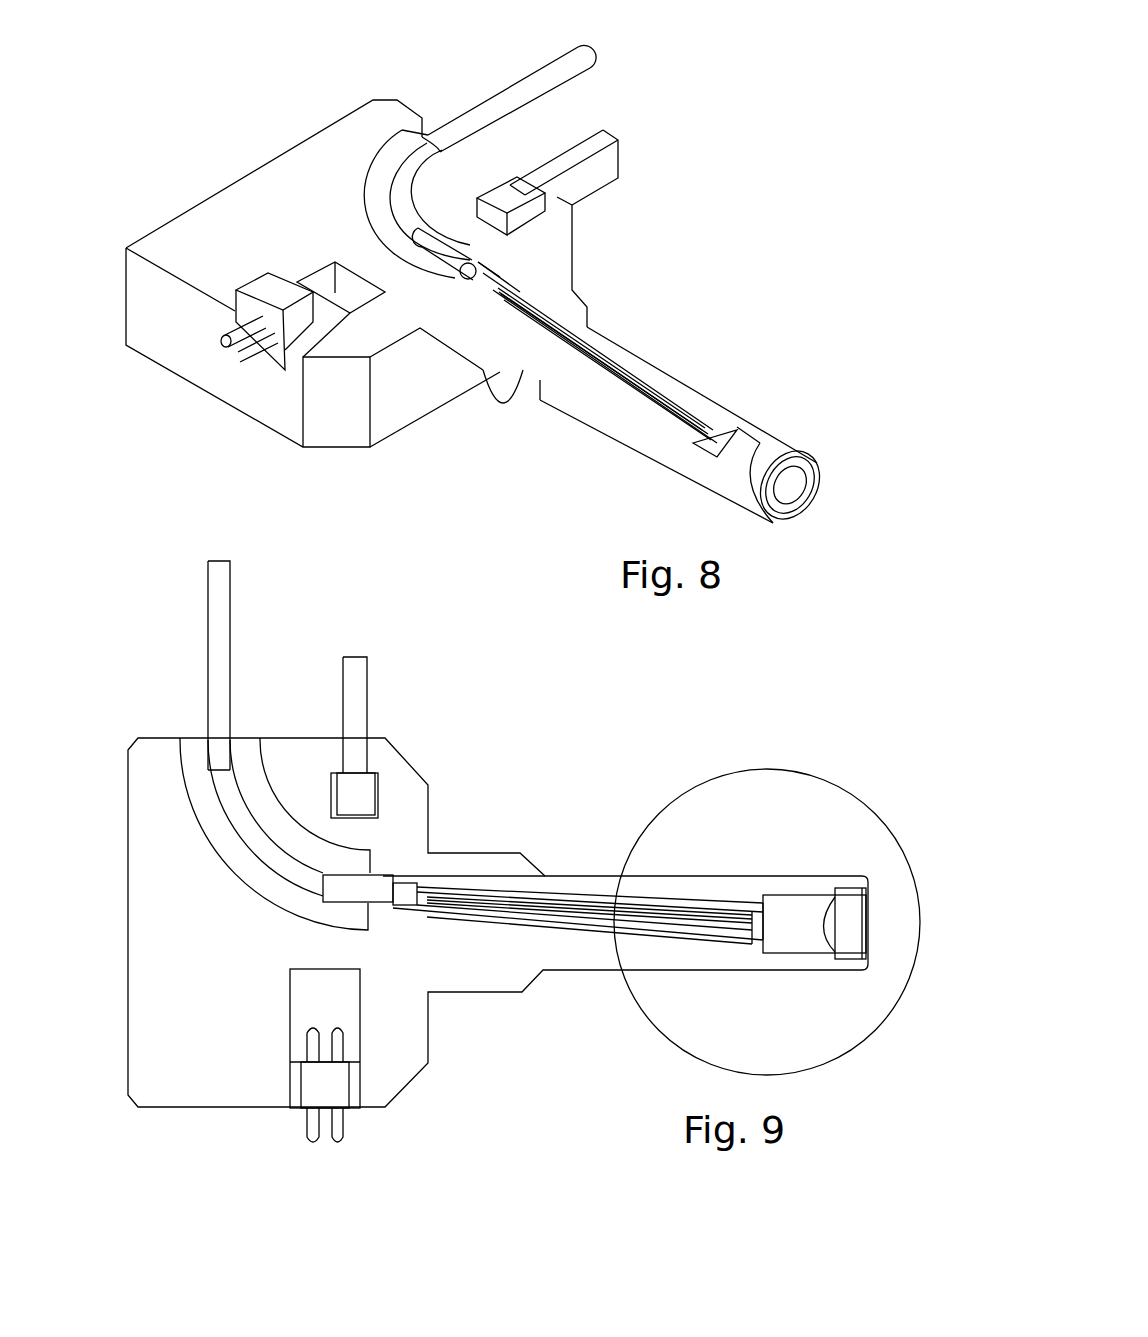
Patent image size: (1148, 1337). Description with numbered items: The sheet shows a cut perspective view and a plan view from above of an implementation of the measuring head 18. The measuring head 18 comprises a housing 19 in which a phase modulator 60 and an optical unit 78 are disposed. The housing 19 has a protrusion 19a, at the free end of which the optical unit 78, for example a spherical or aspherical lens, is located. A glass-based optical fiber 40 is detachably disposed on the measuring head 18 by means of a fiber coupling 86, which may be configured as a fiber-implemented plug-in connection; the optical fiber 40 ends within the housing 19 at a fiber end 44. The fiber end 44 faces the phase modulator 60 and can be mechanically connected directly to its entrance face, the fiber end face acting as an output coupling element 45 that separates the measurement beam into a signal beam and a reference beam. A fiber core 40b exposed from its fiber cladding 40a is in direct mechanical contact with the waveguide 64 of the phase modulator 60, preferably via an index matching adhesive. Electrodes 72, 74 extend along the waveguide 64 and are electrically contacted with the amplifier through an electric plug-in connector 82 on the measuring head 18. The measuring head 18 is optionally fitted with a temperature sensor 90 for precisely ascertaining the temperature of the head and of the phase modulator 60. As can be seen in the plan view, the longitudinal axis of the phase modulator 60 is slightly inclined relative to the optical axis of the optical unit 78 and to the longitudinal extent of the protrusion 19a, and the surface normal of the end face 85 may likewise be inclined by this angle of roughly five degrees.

In FIG. 8, the measuring head 18 is at (356, 243).
In FIG. 9, the measuring head 18 is at (498, 882).
In FIG. 8, the housing 19 is at (160, 240).
In FIG. 9, the housing 19 is at (294, 750).
In FIG. 8, the protrusion 19a is at (728, 415).
In FIG. 9, the protrusion 19a is at (600, 880).
In FIG. 8, the optical fiber 40 is at (478, 118).
In FIG. 9, the optical fiber 40 is at (217, 582).
In FIG. 9, the fiber cladding 40a is at (383, 890).
In FIG. 8, the fiber core 40b is at (500, 277).
In FIG. 9, the fiber core 40b is at (395, 900).
In FIG. 8, the fiber end 44 is at (484, 298).
In FIG. 8, the output coupling element 45 is at (497, 305).
In FIG. 8, the phase modulator 60 is at (765, 268).
In FIG. 8, the waveguide 64 is at (692, 420).
In FIG. 9, the waveguide 64 is at (757, 945).
In FIG. 9, the electrode 72 is at (604, 940).
In FIG. 9, the electrode 74 is at (485, 895).
In FIG. 8, the optical unit 78 is at (786, 443).
In FIG. 9, the optical unit 78 is at (850, 895).
In FIG. 8, the electric plug-in connector 82 is at (275, 290).
In FIG. 9, the electric plug-in connector 82 is at (312, 1100).
In FIG. 8, the end face 85 is at (720, 445).
In FIG. 8, the fiber coupling 86 is at (432, 122).
In FIG. 9, the fiber coupling 86 is at (195, 725).
In FIG. 8, the temperature sensor 90 is at (520, 195).
In FIG. 9, the temperature sensor 90 is at (375, 790).